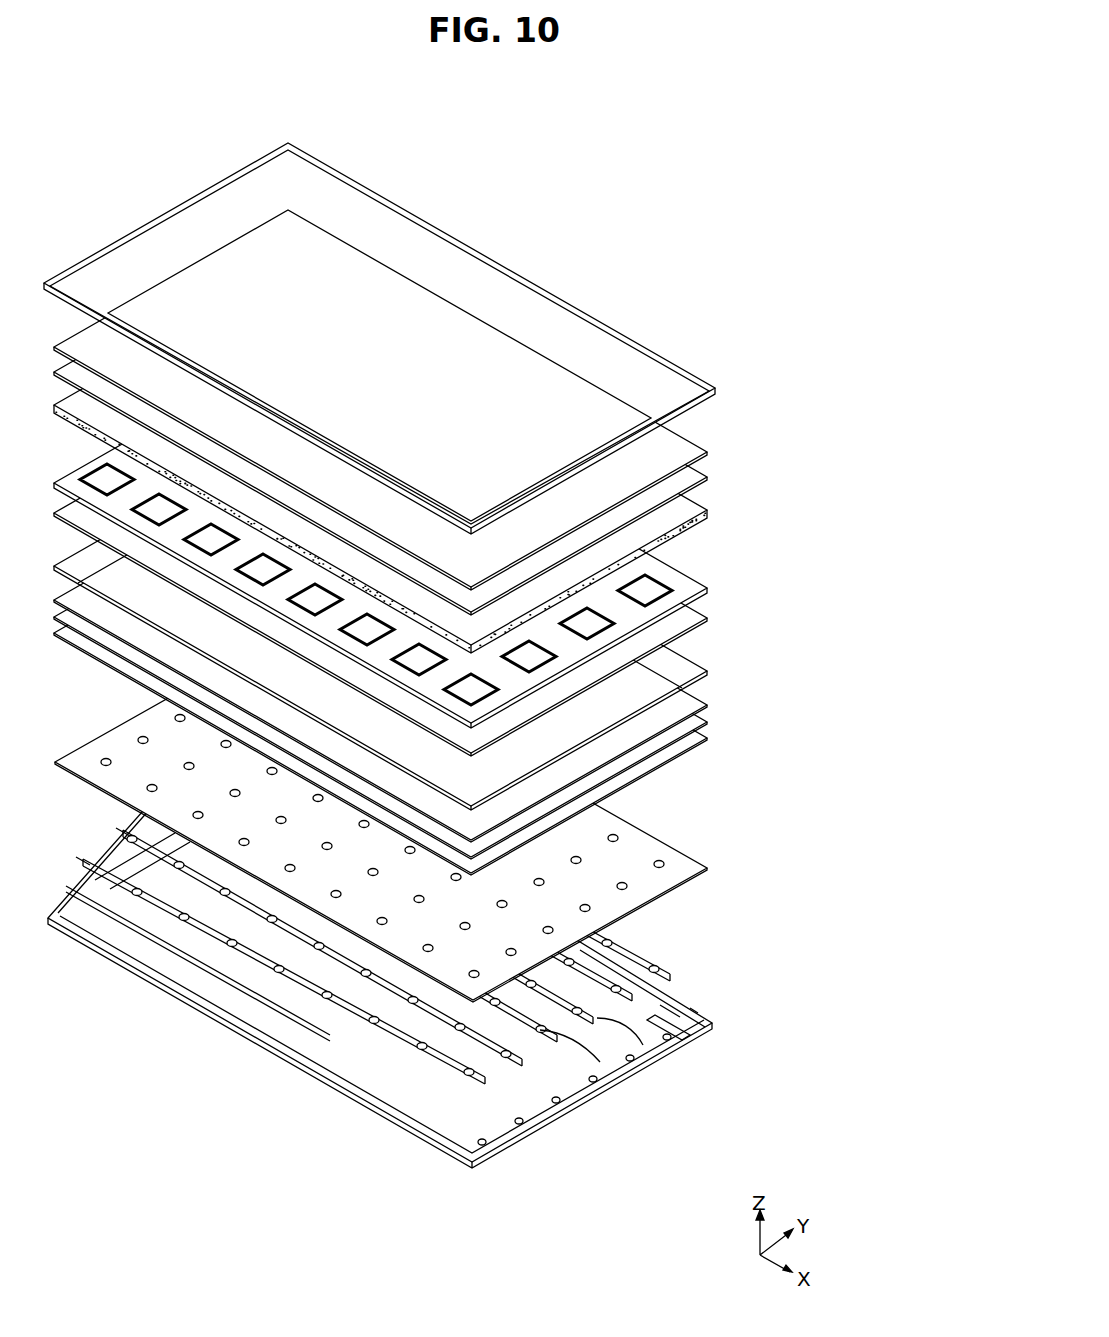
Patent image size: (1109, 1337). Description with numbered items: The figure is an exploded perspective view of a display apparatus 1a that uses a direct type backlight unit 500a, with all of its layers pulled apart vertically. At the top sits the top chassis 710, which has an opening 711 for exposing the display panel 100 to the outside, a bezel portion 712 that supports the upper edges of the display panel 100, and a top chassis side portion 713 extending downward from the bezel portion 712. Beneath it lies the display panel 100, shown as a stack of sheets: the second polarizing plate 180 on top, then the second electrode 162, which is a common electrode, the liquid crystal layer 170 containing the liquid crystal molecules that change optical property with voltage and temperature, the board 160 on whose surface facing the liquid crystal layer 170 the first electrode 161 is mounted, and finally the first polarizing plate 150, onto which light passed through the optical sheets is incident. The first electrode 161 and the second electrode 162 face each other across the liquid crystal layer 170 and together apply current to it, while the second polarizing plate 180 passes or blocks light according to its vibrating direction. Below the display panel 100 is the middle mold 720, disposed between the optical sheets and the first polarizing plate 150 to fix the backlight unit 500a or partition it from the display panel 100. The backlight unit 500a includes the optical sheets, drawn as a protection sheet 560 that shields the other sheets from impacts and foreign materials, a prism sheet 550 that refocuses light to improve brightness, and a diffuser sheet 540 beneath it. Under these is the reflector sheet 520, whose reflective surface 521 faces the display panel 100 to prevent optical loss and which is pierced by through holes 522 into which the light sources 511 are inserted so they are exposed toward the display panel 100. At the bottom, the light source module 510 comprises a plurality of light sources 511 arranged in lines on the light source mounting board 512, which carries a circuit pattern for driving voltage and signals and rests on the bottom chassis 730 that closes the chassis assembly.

The display apparatus 1a is at (641, 216).
The display panel 100 is at (802, 446).
The first polarizing plate 150 is at (703, 620).
The board 160 is at (424, 538).
The first electrode 161 is at (650, 594).
The liquid crystal layer 170 is at (703, 511).
The second electrode 162 is at (703, 478).
The second polarizing plate 180 is at (703, 447).
The top chassis 710 is at (432, 338).
The opening 711 is at (630, 370).
The bezel portion 712 is at (705, 379).
The top chassis side portion 713 is at (705, 398).
The middle mold 720 is at (710, 672).
The bottom chassis 730 is at (728, 1026).
The backlight unit 500a is at (870, 950).
The light source module 510 is at (461, 945).
The light source 511 is at (468, 1076).
The light source mounting board 512 is at (603, 1062).
The reflector sheet 520 is at (467, 816).
The reflective surface 521 is at (673, 862).
The through hole 522 is at (620, 887).
The diffuser sheet 540 is at (705, 738).
The prism sheet 550 is at (707, 722).
The protection sheet 560 is at (705, 702).